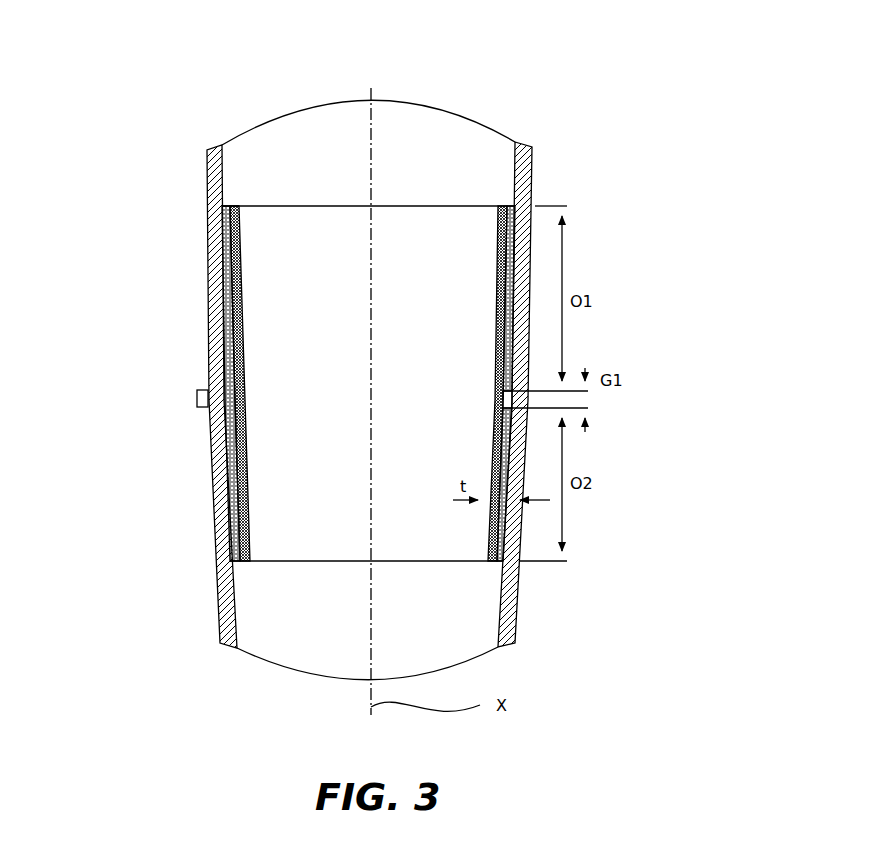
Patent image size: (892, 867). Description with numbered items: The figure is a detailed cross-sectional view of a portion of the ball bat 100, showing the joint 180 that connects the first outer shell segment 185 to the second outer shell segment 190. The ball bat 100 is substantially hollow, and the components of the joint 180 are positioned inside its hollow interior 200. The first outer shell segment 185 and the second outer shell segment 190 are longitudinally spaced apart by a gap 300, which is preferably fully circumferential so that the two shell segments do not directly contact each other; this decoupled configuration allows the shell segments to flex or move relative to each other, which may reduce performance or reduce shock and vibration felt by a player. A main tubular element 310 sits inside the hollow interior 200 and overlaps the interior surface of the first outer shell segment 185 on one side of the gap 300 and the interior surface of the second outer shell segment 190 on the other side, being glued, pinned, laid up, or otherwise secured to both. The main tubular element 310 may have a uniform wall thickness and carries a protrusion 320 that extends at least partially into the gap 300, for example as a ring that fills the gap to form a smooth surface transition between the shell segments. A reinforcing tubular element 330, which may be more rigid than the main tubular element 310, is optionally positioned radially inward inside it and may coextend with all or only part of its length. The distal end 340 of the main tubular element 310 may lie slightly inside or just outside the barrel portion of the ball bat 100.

The ball bat 100 is at (580, 78).
The joint 180 is at (150, 392).
The first outer shell segment 185 is at (207, 187).
The second outer shell segment 190 is at (213, 535).
The hollow interior 200 is at (458, 169).
The gap 300 is at (197, 392).
The main tubular element 310 is at (215, 455).
The protrusion 320 is at (508, 400).
The reinforcing tubular element 330 is at (498, 262).
The distal end of the main tubular element 340 is at (225, 205).